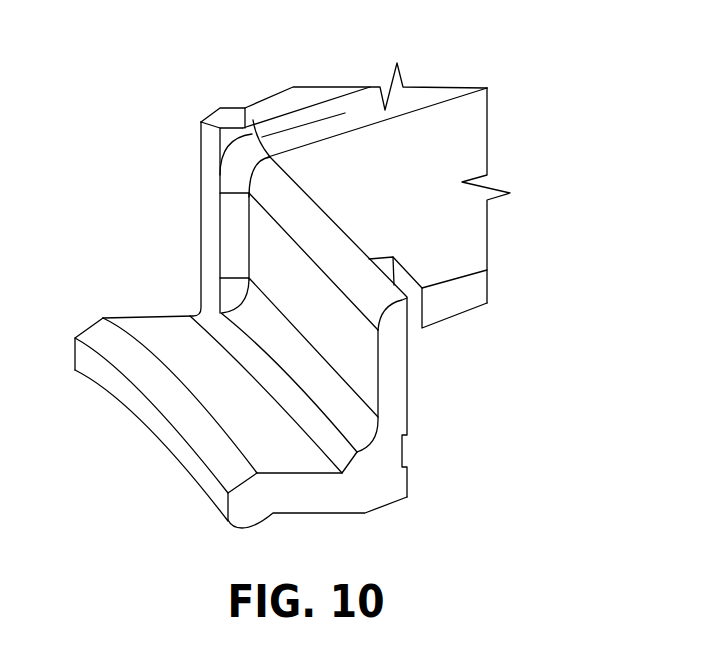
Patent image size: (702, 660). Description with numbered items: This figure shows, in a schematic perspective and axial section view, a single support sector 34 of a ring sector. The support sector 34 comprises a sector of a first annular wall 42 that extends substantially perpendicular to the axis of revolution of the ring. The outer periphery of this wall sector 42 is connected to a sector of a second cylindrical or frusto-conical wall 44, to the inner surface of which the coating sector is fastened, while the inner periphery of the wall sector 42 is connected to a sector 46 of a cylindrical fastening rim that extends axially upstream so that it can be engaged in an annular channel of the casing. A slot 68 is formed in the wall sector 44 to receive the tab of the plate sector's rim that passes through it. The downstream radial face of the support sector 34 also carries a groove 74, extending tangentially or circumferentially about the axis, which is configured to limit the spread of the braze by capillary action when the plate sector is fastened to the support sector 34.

The support sector 34 is at (176, 148).
The first annular wall sector 42 is at (272, 277).
The second cylindrical or frusto-conical wall sector 44 is at (342, 133).
The cylindrical fastening rim sector 46 is at (132, 316).
The slot 68 is at (417, 284).
The groove 74 is at (405, 452).